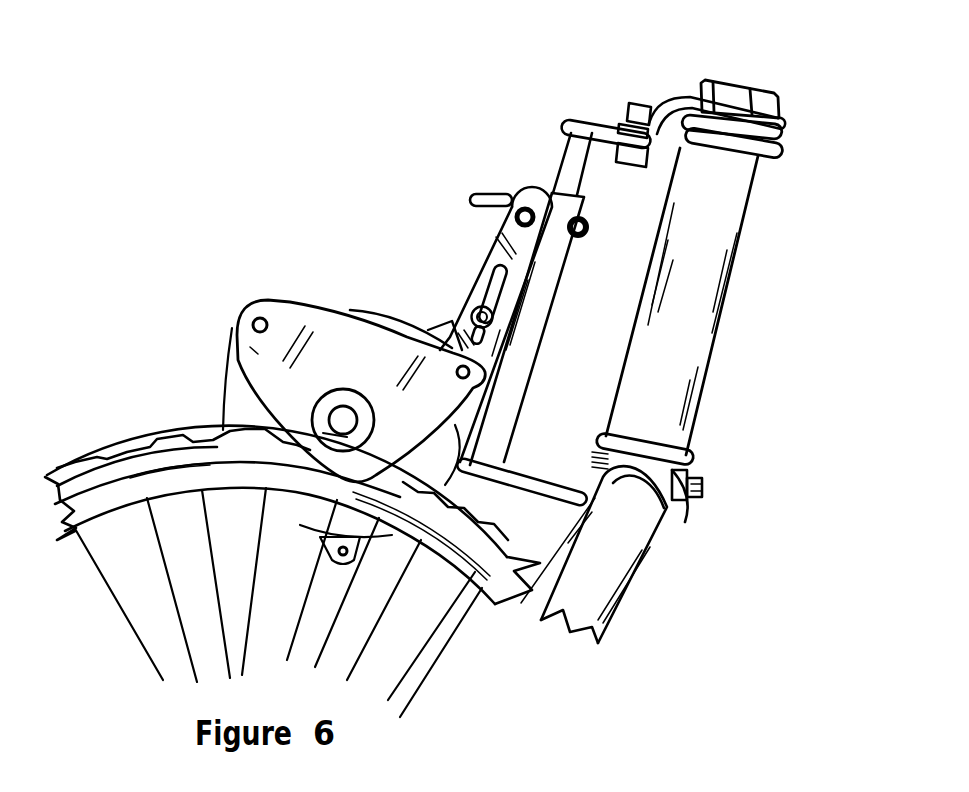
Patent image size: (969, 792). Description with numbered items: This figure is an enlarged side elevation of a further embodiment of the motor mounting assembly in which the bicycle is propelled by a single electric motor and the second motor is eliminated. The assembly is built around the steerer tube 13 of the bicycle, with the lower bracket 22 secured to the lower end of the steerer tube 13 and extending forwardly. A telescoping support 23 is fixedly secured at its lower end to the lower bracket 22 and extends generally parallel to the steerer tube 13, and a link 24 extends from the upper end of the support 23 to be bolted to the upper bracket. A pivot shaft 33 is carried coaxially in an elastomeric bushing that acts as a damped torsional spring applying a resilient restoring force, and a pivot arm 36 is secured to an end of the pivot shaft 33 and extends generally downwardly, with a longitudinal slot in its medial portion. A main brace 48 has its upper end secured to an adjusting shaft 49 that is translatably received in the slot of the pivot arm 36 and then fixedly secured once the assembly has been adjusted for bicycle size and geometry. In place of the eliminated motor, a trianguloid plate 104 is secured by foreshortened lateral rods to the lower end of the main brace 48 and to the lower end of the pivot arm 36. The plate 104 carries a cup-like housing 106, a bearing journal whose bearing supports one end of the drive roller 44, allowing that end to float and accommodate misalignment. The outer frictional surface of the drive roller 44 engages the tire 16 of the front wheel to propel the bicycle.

The steerer tube 13 is at (727, 307).
The tire 16 is at (109, 447).
The lower bracket 22 is at (688, 512).
The telescoping support 23 is at (553, 268).
The link 24 is at (583, 123).
The pivot shaft 33 is at (524, 207).
The pivot arm 36 is at (491, 237).
The drive roller 44 is at (330, 413).
The main brace 48 is at (372, 314).
The adjusting shaft 49 is at (473, 309).
The trianguloid plate 104 is at (288, 323).
The cup-like housing 106 is at (317, 403).